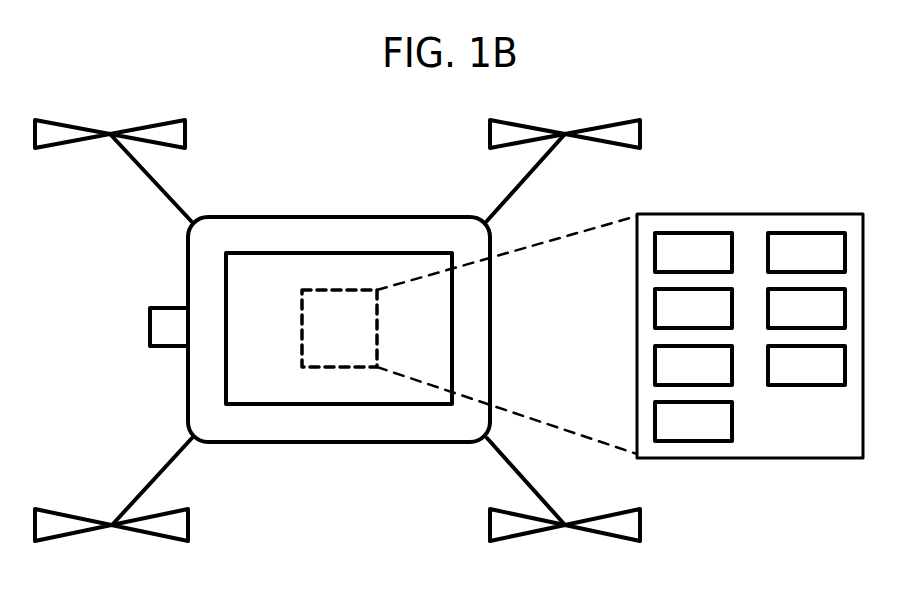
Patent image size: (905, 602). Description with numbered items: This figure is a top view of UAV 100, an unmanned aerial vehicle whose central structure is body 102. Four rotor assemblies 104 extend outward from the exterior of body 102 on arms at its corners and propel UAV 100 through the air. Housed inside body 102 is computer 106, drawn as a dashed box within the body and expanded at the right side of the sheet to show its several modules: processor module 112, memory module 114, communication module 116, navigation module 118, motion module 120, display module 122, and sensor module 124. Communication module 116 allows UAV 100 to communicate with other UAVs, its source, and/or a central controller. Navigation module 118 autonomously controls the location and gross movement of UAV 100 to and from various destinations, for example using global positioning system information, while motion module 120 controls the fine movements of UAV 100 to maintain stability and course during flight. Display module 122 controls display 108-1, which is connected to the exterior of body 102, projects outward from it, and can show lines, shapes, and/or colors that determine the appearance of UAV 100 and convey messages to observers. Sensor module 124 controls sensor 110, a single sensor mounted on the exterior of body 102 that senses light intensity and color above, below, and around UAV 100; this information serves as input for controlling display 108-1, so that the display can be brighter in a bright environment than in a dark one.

The UAV 100 is at (598, 84).
The body 102 is at (300, 216).
The rotor assemblies 104 is at (550, 152).
The computer 106 is at (311, 291).
The display 108-1 is at (338, 404).
The sensor 110 is at (170, 307).
The processor module 112 is at (718, 268).
The memory module 114 is at (831, 268).
The communication module 116 is at (718, 325).
The navigation module 118 is at (831, 325).
The motion module 120 is at (718, 382).
The display module 122 is at (831, 382).
The sensor module 124 is at (718, 438).